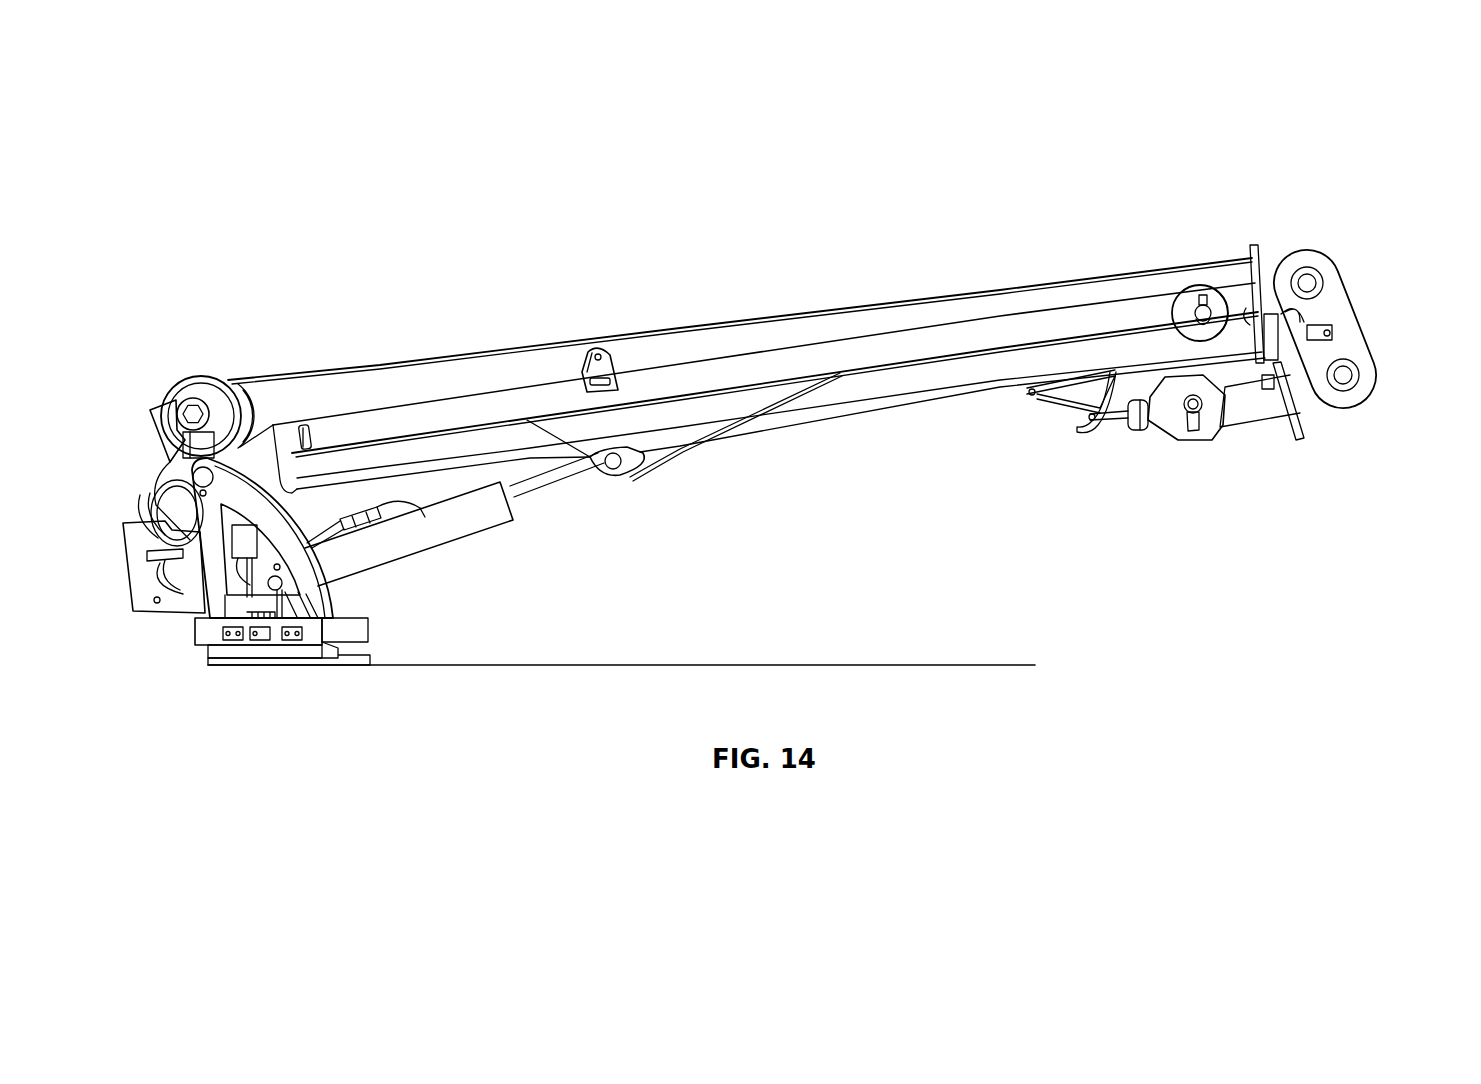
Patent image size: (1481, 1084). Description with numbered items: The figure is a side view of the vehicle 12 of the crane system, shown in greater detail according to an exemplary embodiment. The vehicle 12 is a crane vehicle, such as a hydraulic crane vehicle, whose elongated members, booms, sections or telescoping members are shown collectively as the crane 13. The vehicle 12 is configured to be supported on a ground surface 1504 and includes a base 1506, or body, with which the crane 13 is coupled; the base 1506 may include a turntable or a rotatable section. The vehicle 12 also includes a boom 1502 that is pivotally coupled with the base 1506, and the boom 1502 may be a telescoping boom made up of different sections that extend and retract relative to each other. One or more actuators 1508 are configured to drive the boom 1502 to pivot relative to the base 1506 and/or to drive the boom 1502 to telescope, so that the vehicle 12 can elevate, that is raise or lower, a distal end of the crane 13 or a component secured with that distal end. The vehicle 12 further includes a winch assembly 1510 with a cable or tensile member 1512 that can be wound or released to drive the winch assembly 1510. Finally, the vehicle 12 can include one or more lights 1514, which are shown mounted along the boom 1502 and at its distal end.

The vehicle 12 is at (208, 337).
The crane 13 is at (890, 266).
The boom 1502 is at (873, 403).
The ground surface 1504 is at (410, 663).
The base 1506 is at (215, 598).
The actuator 1508 is at (488, 535).
The winch assembly 1510 is at (145, 405).
The cable or tensile member 1512 is at (470, 357).
The light 1514 is at (617, 347).